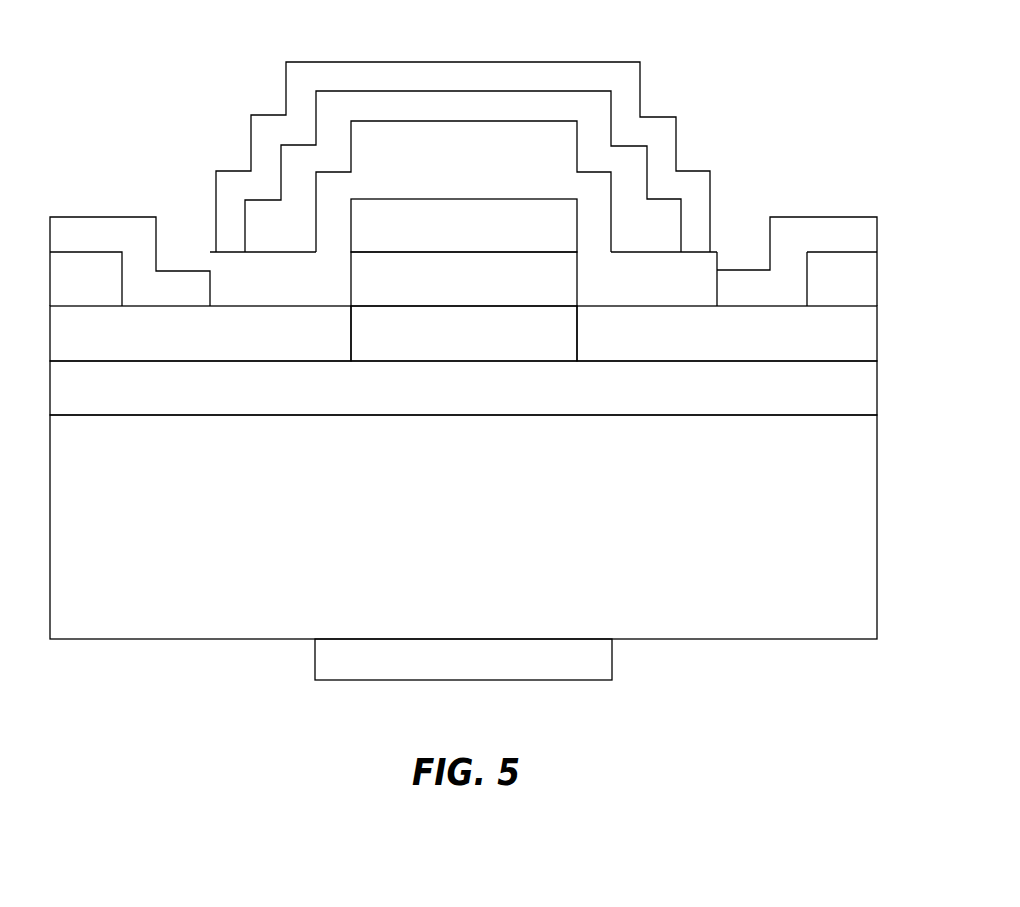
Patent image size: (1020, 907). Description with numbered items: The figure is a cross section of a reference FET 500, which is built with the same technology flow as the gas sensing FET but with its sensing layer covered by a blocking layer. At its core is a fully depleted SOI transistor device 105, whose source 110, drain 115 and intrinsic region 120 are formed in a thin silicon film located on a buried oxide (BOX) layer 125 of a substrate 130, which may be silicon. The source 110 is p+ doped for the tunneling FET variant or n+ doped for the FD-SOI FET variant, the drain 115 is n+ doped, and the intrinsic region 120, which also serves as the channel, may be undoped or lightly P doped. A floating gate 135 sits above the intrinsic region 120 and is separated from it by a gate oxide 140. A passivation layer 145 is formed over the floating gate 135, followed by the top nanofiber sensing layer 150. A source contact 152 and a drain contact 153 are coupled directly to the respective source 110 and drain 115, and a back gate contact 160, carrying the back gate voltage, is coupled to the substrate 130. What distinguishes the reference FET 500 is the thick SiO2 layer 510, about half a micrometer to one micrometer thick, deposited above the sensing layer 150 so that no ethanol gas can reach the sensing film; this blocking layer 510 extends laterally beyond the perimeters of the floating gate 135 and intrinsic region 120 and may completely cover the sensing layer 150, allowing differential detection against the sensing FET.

The reference FET 500 is at (114, 52).
The SiO2 layer 510 is at (463, 62).
The sensing layer 150 is at (577, 103).
The source contact 152 is at (103, 217).
The drain contact 153 is at (825, 217).
The floating gate 135 is at (512, 199).
The gate oxide 140 is at (562, 287).
The FD-SOI-T-FET device 105 is at (594, 233).
The passivation layer 145 is at (660, 267).
The source 110 is at (63, 335).
The intrinsic region 120 is at (563, 337).
The drain 115 is at (862, 337).
The buried oxide (BOX) layer 125 is at (862, 393).
The substrate 130 is at (862, 517).
The back gate contact 160 is at (598, 664).